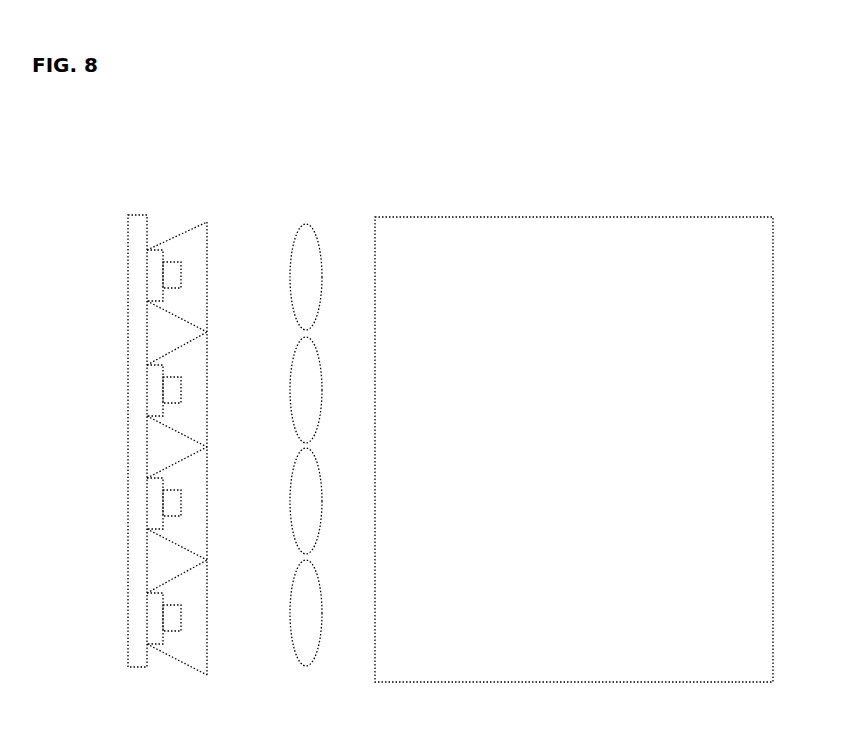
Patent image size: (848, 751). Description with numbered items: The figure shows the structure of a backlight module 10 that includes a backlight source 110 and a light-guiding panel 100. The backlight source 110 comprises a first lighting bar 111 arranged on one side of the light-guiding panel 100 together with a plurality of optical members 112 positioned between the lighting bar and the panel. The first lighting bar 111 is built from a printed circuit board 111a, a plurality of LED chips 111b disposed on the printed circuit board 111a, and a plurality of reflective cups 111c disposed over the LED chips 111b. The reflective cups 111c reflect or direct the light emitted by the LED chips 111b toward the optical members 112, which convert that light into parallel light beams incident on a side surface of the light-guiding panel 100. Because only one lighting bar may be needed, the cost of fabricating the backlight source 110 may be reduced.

The backlight module 10 is at (747, 121).
The light-guiding panel 100 is at (403, 240).
The backlight source 110 is at (185, 412).
The first lighting bar 111 is at (185, 245).
The printed circuit board 111a is at (133, 652).
The LED chip 111b is at (160, 610).
The reflective cup 111c is at (208, 665).
The optical member 112 is at (315, 287).